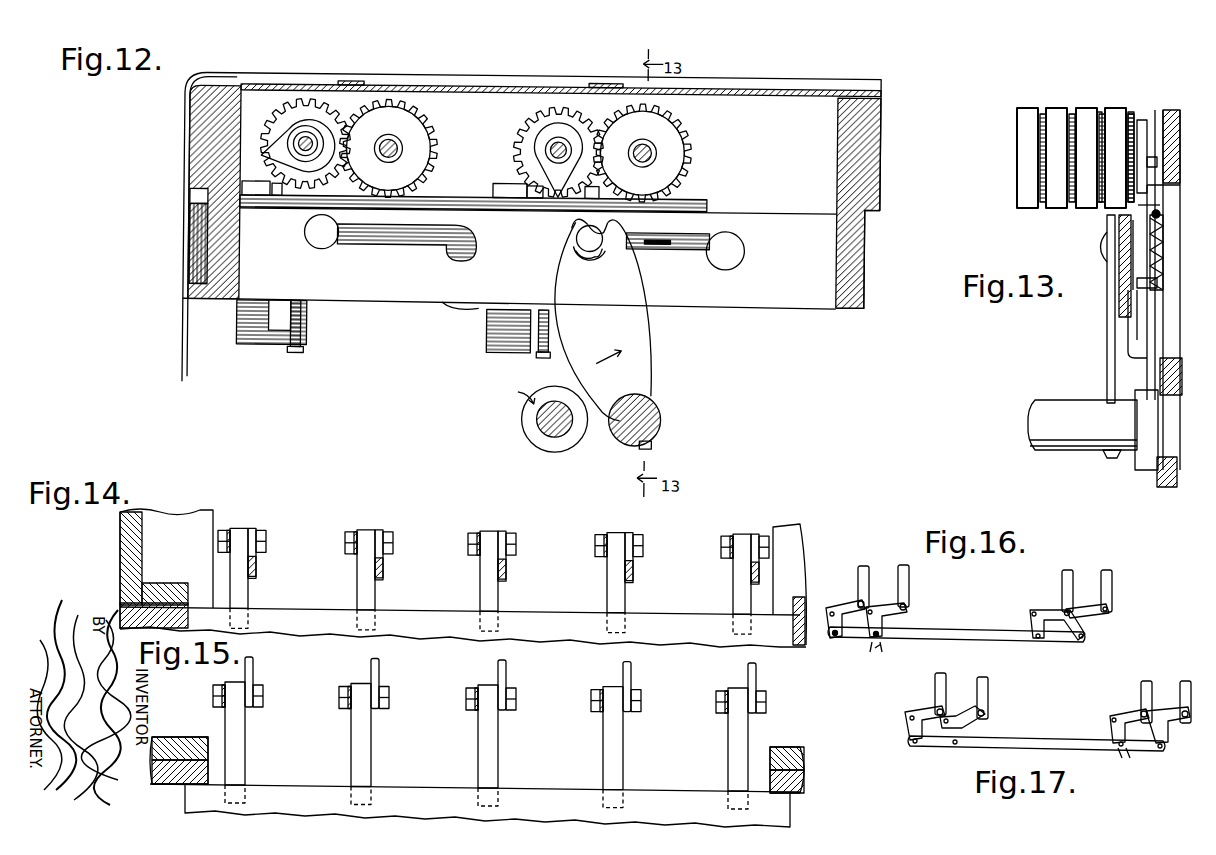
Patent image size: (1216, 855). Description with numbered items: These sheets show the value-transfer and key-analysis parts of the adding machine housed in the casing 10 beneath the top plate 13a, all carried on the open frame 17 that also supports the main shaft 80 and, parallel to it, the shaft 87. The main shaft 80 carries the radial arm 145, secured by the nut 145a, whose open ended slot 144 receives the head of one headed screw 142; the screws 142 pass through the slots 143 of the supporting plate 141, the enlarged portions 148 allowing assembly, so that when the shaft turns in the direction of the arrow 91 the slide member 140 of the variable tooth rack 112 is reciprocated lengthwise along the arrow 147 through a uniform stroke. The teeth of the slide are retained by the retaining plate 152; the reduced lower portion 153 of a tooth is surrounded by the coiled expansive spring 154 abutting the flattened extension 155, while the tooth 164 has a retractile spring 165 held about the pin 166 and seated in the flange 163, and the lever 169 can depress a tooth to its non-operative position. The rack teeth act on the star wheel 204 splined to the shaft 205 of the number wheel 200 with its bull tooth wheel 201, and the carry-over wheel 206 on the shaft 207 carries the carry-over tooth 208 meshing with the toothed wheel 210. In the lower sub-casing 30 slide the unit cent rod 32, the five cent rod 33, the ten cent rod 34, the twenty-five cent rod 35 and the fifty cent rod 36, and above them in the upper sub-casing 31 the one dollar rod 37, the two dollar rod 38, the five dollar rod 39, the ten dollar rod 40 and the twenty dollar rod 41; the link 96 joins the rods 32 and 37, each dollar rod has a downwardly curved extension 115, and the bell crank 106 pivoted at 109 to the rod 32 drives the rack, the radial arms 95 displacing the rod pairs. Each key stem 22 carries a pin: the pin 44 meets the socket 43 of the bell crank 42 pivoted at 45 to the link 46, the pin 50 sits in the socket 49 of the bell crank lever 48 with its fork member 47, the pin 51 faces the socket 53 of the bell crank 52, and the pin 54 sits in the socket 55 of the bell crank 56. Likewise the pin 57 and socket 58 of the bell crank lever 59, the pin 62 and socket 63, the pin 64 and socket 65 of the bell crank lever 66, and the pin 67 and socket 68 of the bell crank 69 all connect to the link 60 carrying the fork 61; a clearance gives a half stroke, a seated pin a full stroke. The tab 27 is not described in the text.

In FIG. 12, the casing 10 is at (184, 164).
In FIG. 12, the top plate 13a is at (452, 87).
In FIG. 12, the frame 17 is at (218, 302).
In FIG. 14, the frame 17 is at (172, 522).
In FIG. 15, the frame 17 is at (176, 737).
In FIG. 12, the tab 27 is at (350, 83).
In FIG. 12, the shaft 80 is at (660, 414).
In FIG. 13, the shaft 80 is at (1070, 412).
In FIG. 12, the shaft 87 is at (540, 422).
In FIG. 12, the arrow 91 is at (558, 377).
In FIG. 12, the radial arm 95 is at (563, 450).
In FIG. 12, the variable tooth rack 112 is at (468, 312).
In FIG. 13, the variable tooth rack 112 is at (1163, 262).
In FIG. 12, the slide member 140 is at (700, 203).
In FIG. 13, the slide member 140 is at (1140, 302).
In FIG. 12, the supporting plate 141 is at (410, 300).
In FIG. 13, the supporting plate 141 is at (1120, 300).
In FIG. 12, the headed screw 142 is at (588, 254).
In FIG. 13, the headed screw 142 is at (1100, 250).
In FIG. 12, the slot 143 is at (385, 246).
In FIG. 12, the open ended slot 144 is at (603, 262).
In FIG. 12, the radial arm 145 is at (628, 330).
In FIG. 13, the radial arm 145 is at (1107, 350).
In FIG. 12, the nut 145a is at (656, 442).
In FIG. 13, the nut 145a is at (1110, 458).
In FIG. 12, the arrow 147 is at (660, 248).
In FIG. 12, the enlarged portion 148 is at (748, 245).
In FIG. 13, the retaining plate 152 is at (1165, 228).
In FIG. 12, the lower portion 153 is at (303, 318).
In FIG. 12, the coiled expansive spring 154 is at (303, 336).
In FIG. 12, the flattened extension 155 is at (268, 348).
In FIG. 13, the flattened extension 155 is at (1128, 358).
In FIG. 13, the flange 163 is at (1160, 214).
In FIG. 13, the tooth 164 is at (1160, 205).
In FIG. 13, the retractile spring 165 is at (1163, 244).
In FIG. 13, the pin 166 is at (1157, 284).
In FIG. 13, the lever 169 is at (1131, 272).
In FIG. 12, the number wheel 200 is at (432, 120).
In FIG. 13, the number wheel 200 is at (1112, 107).
In FIG. 13, the bull tooth wheel 201 is at (1099, 112).
In FIG. 13, the star wheel 204 is at (1142, 120).
In FIG. 12, the shaft 205 is at (402, 148).
In FIG. 12, the carry-over wheel 206 is at (527, 132).
In FIG. 12, the shaft 207 is at (306, 136).
In FIG. 12, the carry-over tooth 208 is at (290, 147).
In FIG. 12, the toothed wheel 210 is at (388, 112).
In FIG. 13, the toothed wheel 210 is at (1110, 205).
In FIG. 16, the key stem 22 is at (868, 572).
In FIG. 17, the key stem 22 is at (980, 682).
In FIG. 14, the sub-casing 30 is at (557, 622).
In FIG. 15, the sub-casing 31 is at (556, 798).
In FIG. 14, the 1¢ rod 32 is at (733, 596).
In FIG. 14, the 5¢ rod 33 is at (628, 592).
In FIG. 14, the 10¢ rod 34 is at (500, 590).
In FIG. 14, the 25¢ rod 35 is at (377, 585).
In FIG. 14, the 50¢ rod 36 is at (248, 580).
In FIG. 15, the $1 rod 37 is at (748, 736).
In FIG. 15, the $2 rod 38 is at (623, 757).
In FIG. 15, the $5 rod 39 is at (498, 745).
In FIG. 15, the $10 rod 40 is at (371, 744).
In FIG. 15, the $20 rod 41 is at (245, 730).
In FIG. 16, the bell crank 42 is at (843, 606).
In FIG. 16, the socket 43 is at (873, 608).
In FIG. 16, the pin 44 is at (864, 602).
In FIG. 16, the pivot 45 is at (829, 646).
In FIG. 16, the link 46 is at (913, 635).
In FIG. 16, the fork member 47 is at (873, 650).
In FIG. 16, the bell crank lever 48 is at (890, 613).
In FIG. 16, the socket 49 is at (908, 608).
In FIG. 16, the pin 50 is at (907, 604).
In FIG. 16, the pin 51 is at (1066, 610).
In FIG. 16, the bell crank 52 is at (1040, 610).
In FIG. 16, the socket 53 is at (1079, 638).
In FIG. 16, the pin 54 is at (1108, 607).
In FIG. 16, the socket 55 is at (1109, 613).
In FIG. 16, the bell crank 56 is at (1092, 620).
In FIG. 17, the pin 57 is at (943, 710).
In FIG. 17, the socket 58 is at (942, 720).
In FIG. 17, the bell crank lever 59 is at (908, 734).
In FIG. 17, the link 60 is at (1038, 745).
In FIG. 17, the fork 61 is at (1124, 758).
In FIG. 17, the pin 62 is at (985, 711).
In FIG. 17, the socket 63 is at (985, 724).
In FIG. 17, the pin 64 is at (1144, 710).
In FIG. 17, the socket 65 is at (1146, 718).
In FIG. 17, the bell crank lever 66 is at (1130, 716).
In FIG. 17, the pin 67 is at (1182, 710).
In FIG. 17, the socket 68 is at (1186, 718).
In FIG. 17, the bell crank 69 is at (1170, 730).
In FIG. 14, the link 96 is at (357, 528).
In FIG. 15, the link 96 is at (350, 702).
In FIG. 14, the bell crank 106 is at (385, 538).
In FIG. 14, the pivot 109 is at (510, 533).
In FIG. 15, the extension 115 is at (253, 663).